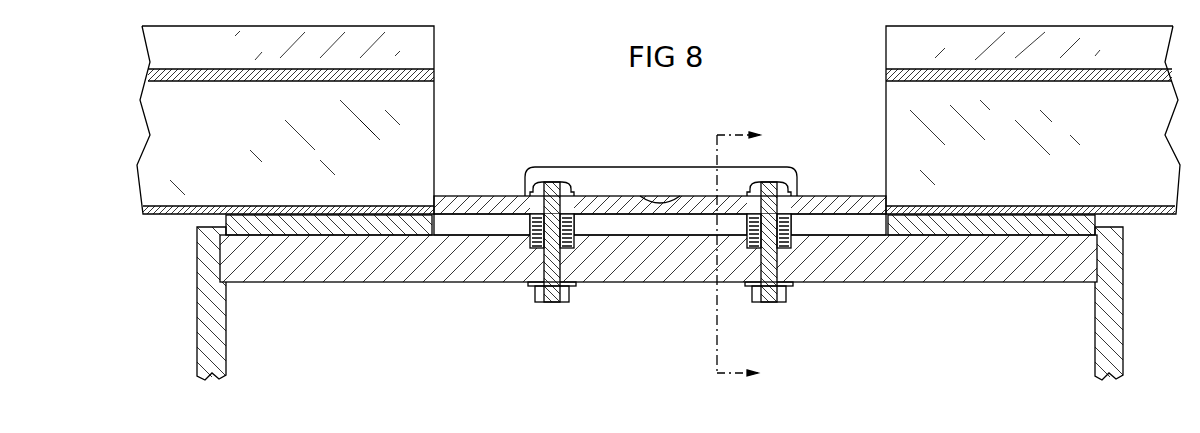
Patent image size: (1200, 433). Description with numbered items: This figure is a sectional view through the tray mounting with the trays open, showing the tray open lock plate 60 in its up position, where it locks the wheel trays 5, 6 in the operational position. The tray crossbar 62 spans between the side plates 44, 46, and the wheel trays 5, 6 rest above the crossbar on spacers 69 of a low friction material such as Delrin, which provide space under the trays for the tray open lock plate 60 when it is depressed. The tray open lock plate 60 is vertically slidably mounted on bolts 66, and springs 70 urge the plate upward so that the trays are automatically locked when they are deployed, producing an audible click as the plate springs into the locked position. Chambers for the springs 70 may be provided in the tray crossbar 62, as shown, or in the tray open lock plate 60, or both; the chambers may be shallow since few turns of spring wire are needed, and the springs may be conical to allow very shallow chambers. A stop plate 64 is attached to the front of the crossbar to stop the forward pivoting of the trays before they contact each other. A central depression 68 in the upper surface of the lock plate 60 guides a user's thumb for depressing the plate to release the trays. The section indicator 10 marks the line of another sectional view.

The wheel tray 5 is at (227, 138).
The wheel tray 6 is at (1108, 138).
The section line 10 is at (755, 253).
The side plate 44 is at (223, 345).
The side plate 46 is at (1095, 345).
The tray open lock plate 60 is at (482, 207).
The tray crossbar 62 is at (662, 272).
The stop plate 64 is at (632, 178).
The bolt 66 is at (552, 298).
The central depression 68 is at (658, 200).
The spacer 69 is at (347, 222).
The spring 70 is at (573, 225).